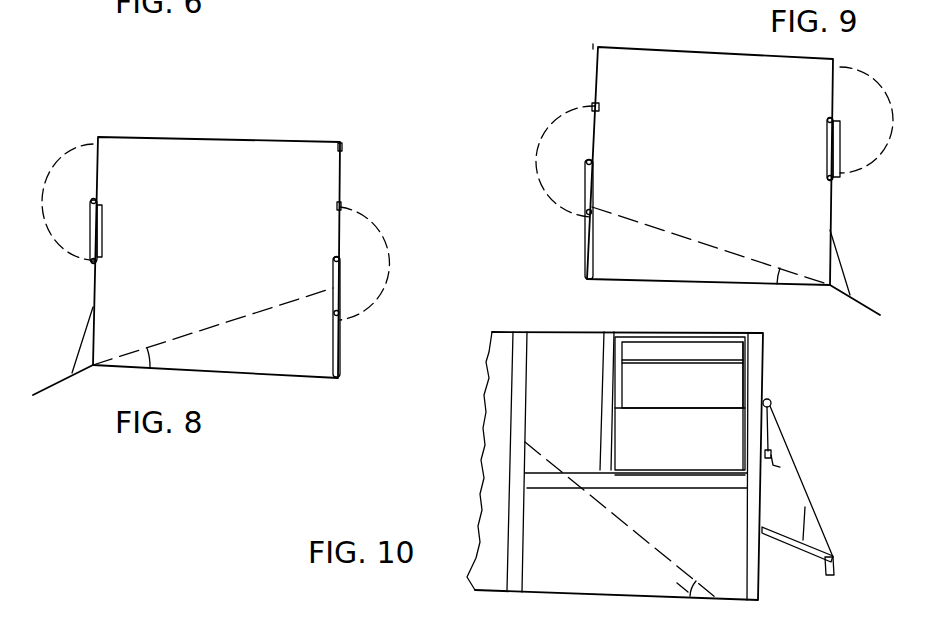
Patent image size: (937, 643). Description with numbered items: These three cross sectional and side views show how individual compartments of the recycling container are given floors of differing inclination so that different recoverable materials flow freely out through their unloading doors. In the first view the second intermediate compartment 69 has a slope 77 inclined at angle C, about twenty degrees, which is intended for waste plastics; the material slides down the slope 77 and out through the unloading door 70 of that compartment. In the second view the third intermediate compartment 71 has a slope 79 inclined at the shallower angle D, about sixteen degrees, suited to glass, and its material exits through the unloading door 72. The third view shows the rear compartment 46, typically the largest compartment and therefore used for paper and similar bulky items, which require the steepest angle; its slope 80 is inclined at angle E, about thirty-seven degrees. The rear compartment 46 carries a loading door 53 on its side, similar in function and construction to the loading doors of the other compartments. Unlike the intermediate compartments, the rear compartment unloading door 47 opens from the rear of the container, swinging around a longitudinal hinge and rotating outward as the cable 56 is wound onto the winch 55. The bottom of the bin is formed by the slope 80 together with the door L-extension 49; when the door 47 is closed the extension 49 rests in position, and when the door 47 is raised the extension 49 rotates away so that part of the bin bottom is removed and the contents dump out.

In FIG. 8, the second intermediate compartment 69 is at (263, 140).
In FIG. 8, the unloading door 70 is at (62, 378).
In FIG. 8, the slope 77 is at (293, 302).
In FIG. 9, the third intermediate compartment 71 is at (752, 55).
In FIG. 9, the unloading door 72 is at (865, 302).
In FIG. 9, the slope 79 is at (732, 248).
In FIG. 10, the rear compartment 46 is at (560, 332).
In FIG. 10, the loading door 53 is at (700, 393).
In FIG. 10, the winch 55 is at (771, 450).
In FIG. 10, the cable 56 is at (798, 488).
In FIG. 10, the rear compartment unloading door 47 is at (827, 553).
In FIG. 10, the door L-extension 49 is at (837, 565).
In FIG. 10, the slope 80 is at (645, 537).